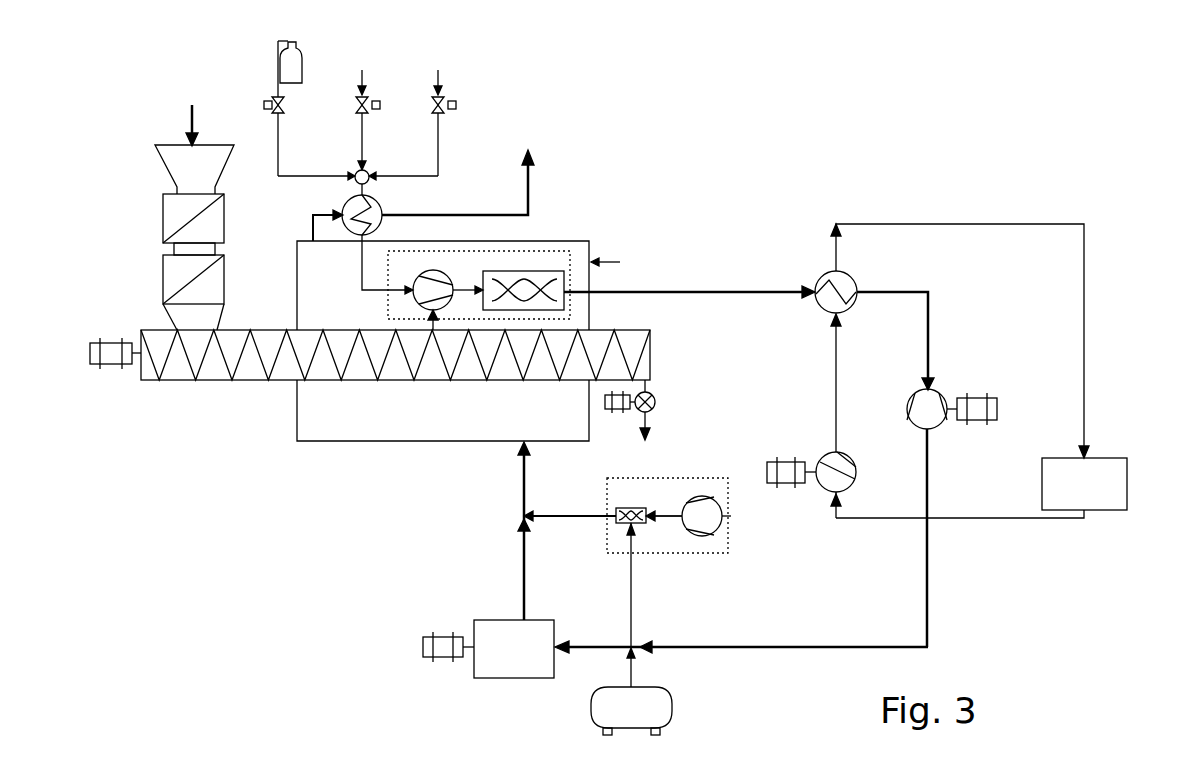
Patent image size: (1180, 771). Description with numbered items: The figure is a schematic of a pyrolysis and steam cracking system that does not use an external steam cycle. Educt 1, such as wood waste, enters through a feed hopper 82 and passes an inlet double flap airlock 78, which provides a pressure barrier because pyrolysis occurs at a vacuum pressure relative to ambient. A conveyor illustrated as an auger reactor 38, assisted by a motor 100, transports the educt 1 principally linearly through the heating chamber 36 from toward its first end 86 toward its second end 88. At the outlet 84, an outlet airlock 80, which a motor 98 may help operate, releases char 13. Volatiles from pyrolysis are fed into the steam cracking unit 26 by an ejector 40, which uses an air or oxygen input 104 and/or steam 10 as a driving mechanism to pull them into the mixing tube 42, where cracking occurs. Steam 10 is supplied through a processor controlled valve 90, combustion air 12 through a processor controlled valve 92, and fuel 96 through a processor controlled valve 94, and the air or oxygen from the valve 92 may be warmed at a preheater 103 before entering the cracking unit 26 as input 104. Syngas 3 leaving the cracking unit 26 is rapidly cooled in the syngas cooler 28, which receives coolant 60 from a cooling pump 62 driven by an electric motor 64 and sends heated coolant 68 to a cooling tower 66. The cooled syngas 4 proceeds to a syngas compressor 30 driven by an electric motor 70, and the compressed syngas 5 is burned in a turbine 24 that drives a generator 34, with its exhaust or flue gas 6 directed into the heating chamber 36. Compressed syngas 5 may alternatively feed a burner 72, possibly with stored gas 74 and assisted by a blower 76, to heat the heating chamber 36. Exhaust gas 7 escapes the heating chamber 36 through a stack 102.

The educt 1 is at (191, 109).
The syngas 3 is at (736, 292).
The cooled syngas 4 is at (902, 292).
The compressed syngas 5 is at (710, 647).
The exhaust or flue gas 6 is at (524, 572).
The exhaust gas 7 is at (324, 215).
The steam 10 is at (440, 70).
The combustion air 12 is at (363, 70).
The char 13 is at (650, 453).
The turbine 24 is at (556, 636).
The steam cracking unit 26 is at (560, 251).
The syngas cooler 28 is at (822, 283).
The syngas compressor 30 is at (913, 397).
The generator 34 is at (443, 637).
The heating chamber 36 is at (357, 441).
The auger reactor 38 is at (278, 380).
The ejector 40 is at (448, 289).
The mixing tube 42 is at (523, 279).
The coolant 60 is at (836, 362).
The cooling pump 62 is at (856, 466).
The electric motor 64 is at (783, 462).
The cooling tower 66 is at (1105, 458).
The heated coolant 68 is at (955, 223).
The electric motor 70 is at (977, 398).
The burner 72 is at (672, 478).
The stored gas 74 is at (672, 705).
The blower 76 is at (720, 503).
The double flap airlock 78 is at (163, 260).
The outlet airlock 80 is at (655, 399).
The feed hopper 82 is at (163, 146).
The outlet 84 is at (649, 427).
The first end 86 is at (290, 262).
The second end 88 is at (623, 262).
The processor controlled valve 90 is at (456, 105).
The processor controlled valve 92 is at (380, 105).
The processor controlled valve 94 is at (284, 105).
The fuel 96 is at (302, 58).
The motor 98 is at (612, 409).
The motor 100 is at (98, 343).
The stack 102 is at (528, 175).
The preheater 103 is at (382, 208).
The air or oxygen input 104 is at (382, 226).